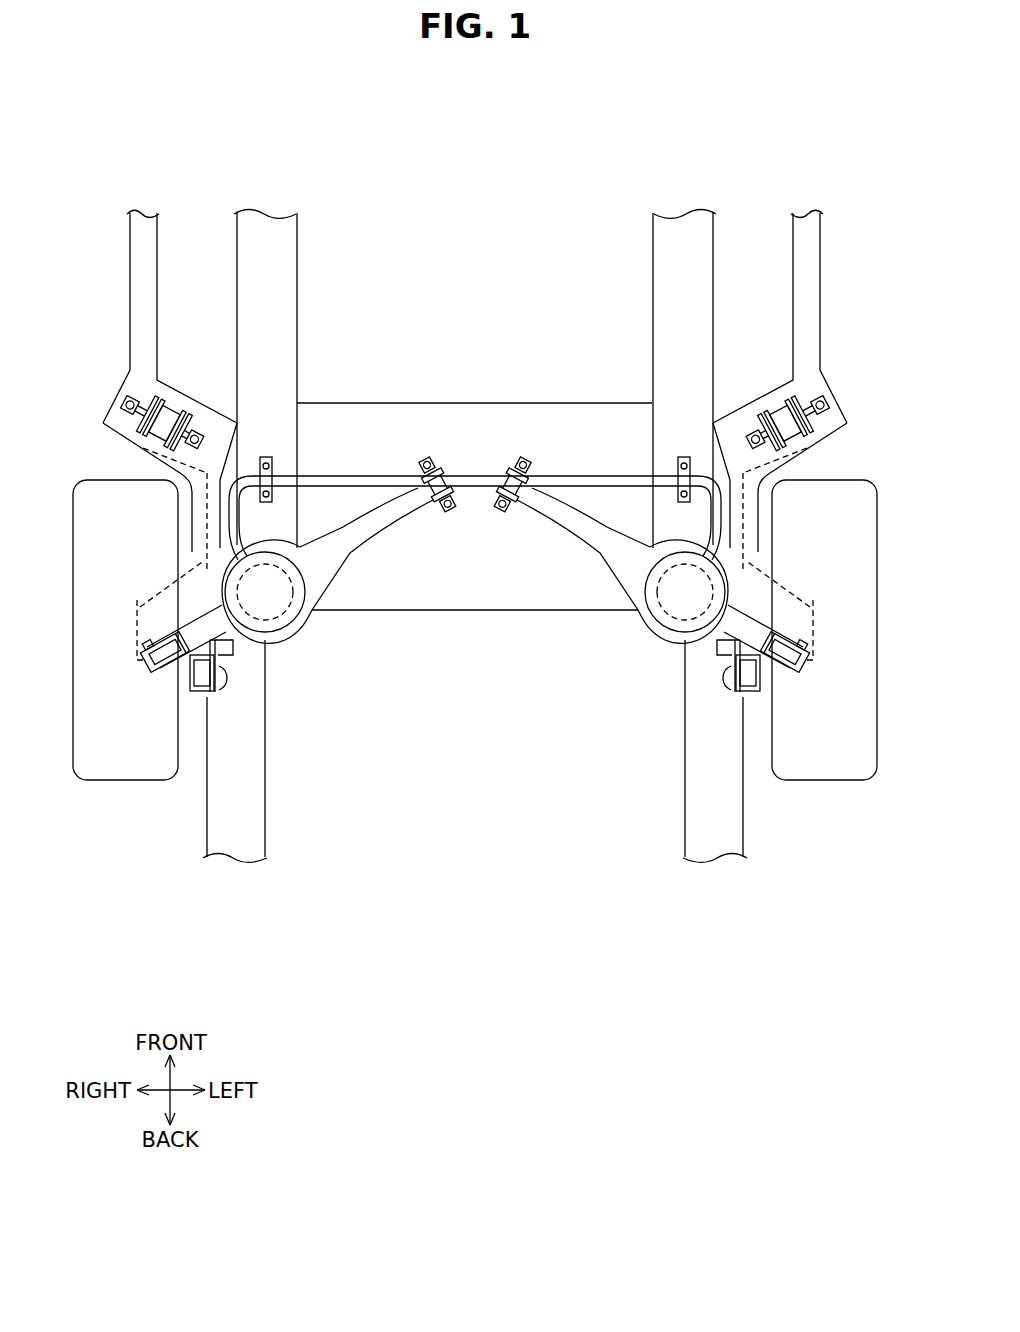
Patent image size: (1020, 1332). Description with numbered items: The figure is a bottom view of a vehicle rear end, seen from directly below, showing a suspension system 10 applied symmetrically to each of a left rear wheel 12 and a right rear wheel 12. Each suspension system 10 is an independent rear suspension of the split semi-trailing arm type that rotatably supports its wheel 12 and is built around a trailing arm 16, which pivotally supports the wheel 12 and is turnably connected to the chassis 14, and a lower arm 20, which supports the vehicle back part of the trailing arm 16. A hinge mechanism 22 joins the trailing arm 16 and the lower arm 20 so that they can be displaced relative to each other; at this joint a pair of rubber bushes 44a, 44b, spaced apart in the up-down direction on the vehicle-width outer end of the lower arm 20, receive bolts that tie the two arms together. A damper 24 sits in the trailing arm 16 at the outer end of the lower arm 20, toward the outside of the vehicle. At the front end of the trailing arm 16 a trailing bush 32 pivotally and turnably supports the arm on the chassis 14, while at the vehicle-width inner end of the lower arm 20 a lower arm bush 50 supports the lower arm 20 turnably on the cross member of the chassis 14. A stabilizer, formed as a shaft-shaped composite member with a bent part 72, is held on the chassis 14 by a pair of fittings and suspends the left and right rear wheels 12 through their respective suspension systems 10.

The suspension system 10 is at (475, 613).
The rear wheel 12 is at (126, 782).
The chassis 14 is at (116, 400).
The trailing arm 16 is at (172, 518).
The lower arm 20 is at (350, 580).
The hinge mechanism 22 is at (132, 678).
The damper 24 is at (231, 709).
The trailing bush 32 is at (175, 395).
The rubber bush 44a is at (140, 680).
The rubber bush 44b is at (508, 730).
The lower arm bush 50 is at (500, 513).
The bent part 72 is at (222, 472).